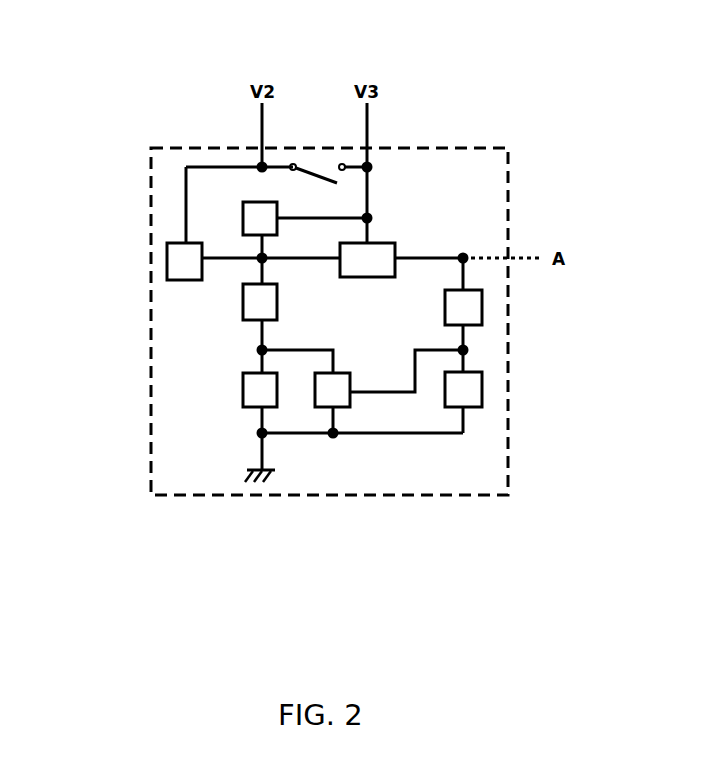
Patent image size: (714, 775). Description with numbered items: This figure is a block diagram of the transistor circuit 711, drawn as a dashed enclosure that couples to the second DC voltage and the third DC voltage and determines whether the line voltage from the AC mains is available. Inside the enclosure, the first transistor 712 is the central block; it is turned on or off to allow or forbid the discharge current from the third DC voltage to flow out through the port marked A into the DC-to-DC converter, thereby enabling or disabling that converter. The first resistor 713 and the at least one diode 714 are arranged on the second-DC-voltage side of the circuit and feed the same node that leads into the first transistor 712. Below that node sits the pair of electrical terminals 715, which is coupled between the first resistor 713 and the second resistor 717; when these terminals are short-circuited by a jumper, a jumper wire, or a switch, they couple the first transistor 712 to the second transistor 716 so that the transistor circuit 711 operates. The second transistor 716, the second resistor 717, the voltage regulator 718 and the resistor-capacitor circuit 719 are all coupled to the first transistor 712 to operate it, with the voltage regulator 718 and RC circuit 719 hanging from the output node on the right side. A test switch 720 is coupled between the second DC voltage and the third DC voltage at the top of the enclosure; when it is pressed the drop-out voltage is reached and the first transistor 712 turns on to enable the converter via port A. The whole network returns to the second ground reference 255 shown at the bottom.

The transistor circuit 711 is at (481, 135).
The first transistor 712 is at (395, 243).
The first resistor 713 is at (243, 200).
The diode 714 is at (167, 258).
The pair of electrical terminals 715 is at (243, 303).
The second transistor 716 is at (350, 408).
The second resistor 717 is at (243, 390).
The voltage regulator 718 is at (482, 303).
The resistor-capacitor (RC) circuit 719 is at (482, 390).
The test switch 720 is at (313, 165).
The second ground reference 255 is at (250, 480).